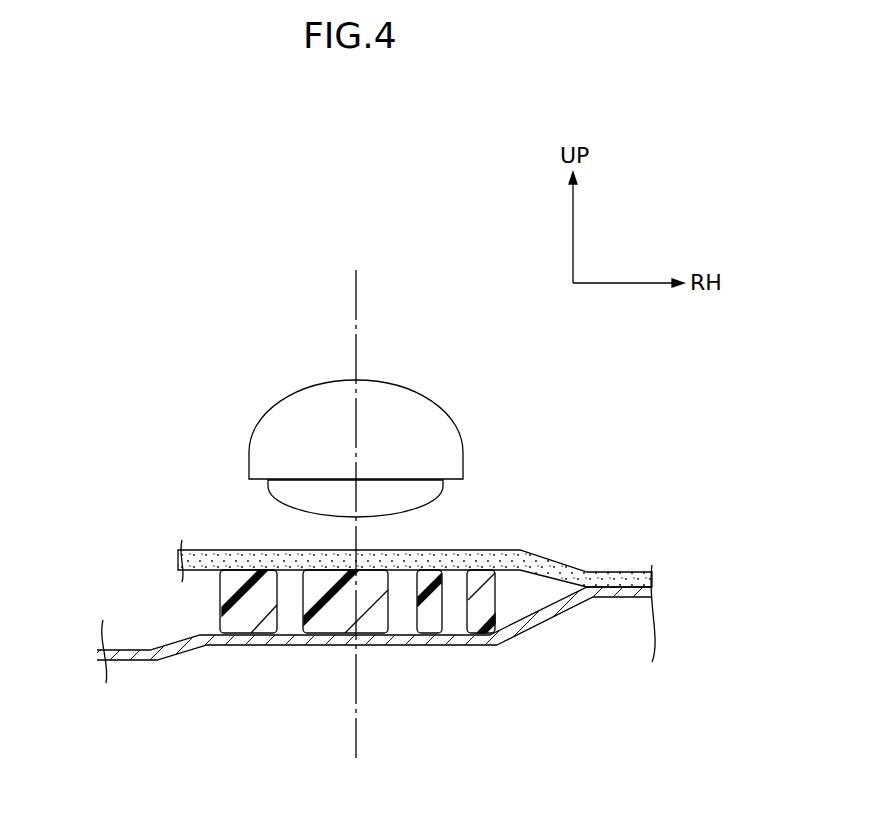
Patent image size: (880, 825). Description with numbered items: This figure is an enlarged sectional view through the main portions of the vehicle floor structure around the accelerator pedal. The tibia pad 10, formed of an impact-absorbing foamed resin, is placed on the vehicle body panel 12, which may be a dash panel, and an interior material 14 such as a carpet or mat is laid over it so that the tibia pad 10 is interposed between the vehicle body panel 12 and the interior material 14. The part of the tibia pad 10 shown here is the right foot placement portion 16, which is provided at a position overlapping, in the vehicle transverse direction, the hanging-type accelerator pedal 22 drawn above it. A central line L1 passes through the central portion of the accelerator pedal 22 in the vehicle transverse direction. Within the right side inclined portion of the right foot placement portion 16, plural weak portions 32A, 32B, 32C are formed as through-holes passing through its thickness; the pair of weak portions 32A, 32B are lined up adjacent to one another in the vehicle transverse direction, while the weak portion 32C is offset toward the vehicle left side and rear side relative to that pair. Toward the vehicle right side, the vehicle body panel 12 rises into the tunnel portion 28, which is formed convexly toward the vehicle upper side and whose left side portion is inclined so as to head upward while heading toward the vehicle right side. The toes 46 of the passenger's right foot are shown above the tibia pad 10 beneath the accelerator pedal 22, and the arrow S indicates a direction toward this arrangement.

The tibia pad 10 is at (364, 607).
The vehicle body panel 12 is at (150, 667).
The interior material 14 is at (197, 550).
The right foot placement portion 16 is at (497, 583).
The accelerator pedal 22 is at (438, 495).
The tunnel portion 28 is at (547, 597).
The weak portion 32A is at (461, 617).
The weak portion 32B is at (412, 618).
The weak portion 32C is at (279, 618).
The toes 46 is at (438, 408).
The central line L1 is at (356, 298).
The incident light S is at (352, 214).